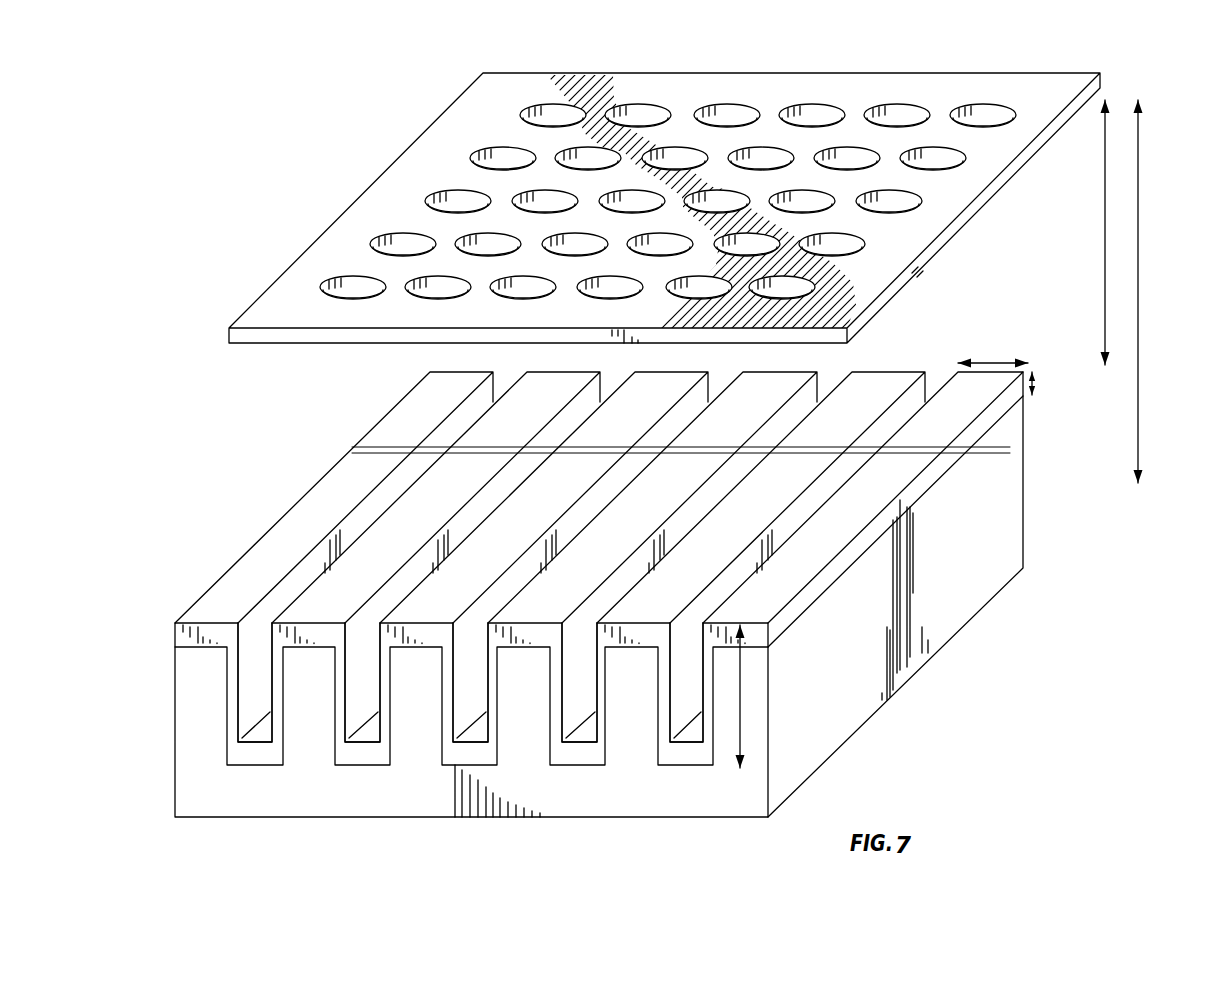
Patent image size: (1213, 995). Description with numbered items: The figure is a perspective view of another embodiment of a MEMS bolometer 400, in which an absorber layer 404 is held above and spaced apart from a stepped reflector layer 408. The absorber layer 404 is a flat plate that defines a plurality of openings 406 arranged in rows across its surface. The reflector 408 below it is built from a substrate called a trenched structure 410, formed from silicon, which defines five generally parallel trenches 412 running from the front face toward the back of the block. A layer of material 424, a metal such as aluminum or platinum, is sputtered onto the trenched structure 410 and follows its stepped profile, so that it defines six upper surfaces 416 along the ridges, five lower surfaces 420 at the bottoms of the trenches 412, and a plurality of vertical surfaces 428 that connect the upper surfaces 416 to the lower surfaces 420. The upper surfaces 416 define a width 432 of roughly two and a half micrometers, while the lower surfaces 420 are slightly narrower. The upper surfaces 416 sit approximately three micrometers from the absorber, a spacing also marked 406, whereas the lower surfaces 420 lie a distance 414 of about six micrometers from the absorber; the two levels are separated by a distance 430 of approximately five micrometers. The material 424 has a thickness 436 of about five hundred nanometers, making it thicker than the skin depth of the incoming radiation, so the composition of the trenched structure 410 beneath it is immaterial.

The MEMS bolometer 400 is at (192, 196).
The absorber layer 404 is at (478, 113).
The openings 406 is at (644, 104).
The stepped reflector layer 408 is at (236, 437).
The trenched structure 410 is at (1023, 492).
The trenches 412 is at (358, 704).
The distance 414 is at (1138, 238).
The upper surfaces 416 is at (452, 405).
The lower surfaces 420 is at (265, 735).
The layer of material 424 is at (902, 473).
The vertical surfaces 428 is at (380, 658).
The distance 430 is at (742, 712).
The width 432 is at (998, 362).
The thickness 436 is at (1034, 385).